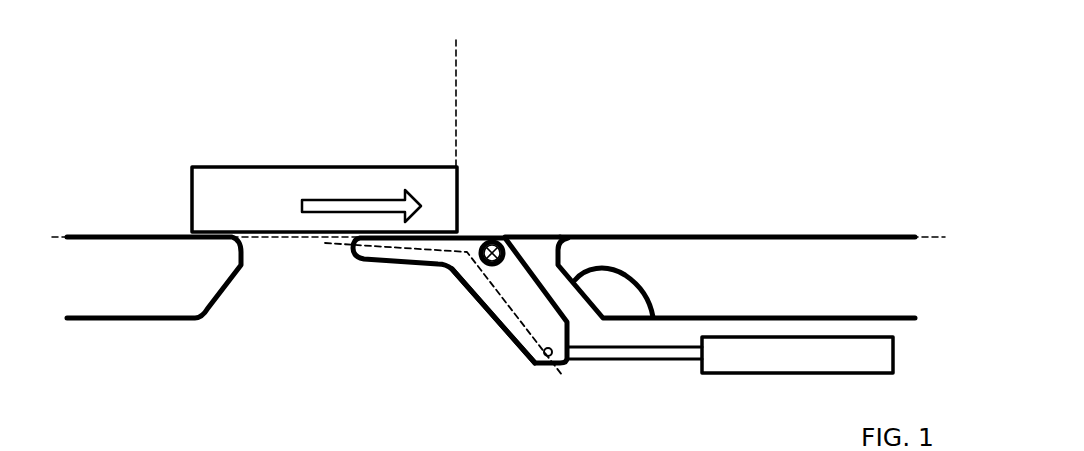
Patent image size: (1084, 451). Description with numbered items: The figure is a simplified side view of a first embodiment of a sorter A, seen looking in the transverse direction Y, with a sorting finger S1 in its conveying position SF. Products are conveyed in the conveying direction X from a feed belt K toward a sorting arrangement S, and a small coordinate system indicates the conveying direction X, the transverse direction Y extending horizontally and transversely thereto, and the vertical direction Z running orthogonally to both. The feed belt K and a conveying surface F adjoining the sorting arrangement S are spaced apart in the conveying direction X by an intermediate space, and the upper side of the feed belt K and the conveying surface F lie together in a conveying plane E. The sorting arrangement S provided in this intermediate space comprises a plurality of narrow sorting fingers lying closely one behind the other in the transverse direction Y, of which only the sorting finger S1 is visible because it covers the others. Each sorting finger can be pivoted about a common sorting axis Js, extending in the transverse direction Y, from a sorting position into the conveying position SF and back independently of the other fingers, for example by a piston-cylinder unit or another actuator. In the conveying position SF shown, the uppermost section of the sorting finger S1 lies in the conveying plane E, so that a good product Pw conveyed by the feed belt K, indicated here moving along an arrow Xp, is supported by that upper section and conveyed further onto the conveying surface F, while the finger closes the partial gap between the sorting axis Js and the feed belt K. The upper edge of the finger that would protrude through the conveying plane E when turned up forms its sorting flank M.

The sorter A is at (112, 111).
The feed belt K is at (114, 297).
The good product Pw is at (290, 197).
The product conveying direction / position Xp is at (490, 47).
The sorting flank M is at (383, 260).
The sorting arrangement S is at (482, 214).
The sorting axis Js is at (497, 228).
The conveying position SF is at (441, 327).
The sorting finger S1 is at (503, 308).
The conveying plane E is at (548, 233).
The conveying surface F is at (758, 236).
The conveying direction X is at (817, 94).
The transverse direction Y is at (821, 90).
The vertical direction Z is at (817, 94).